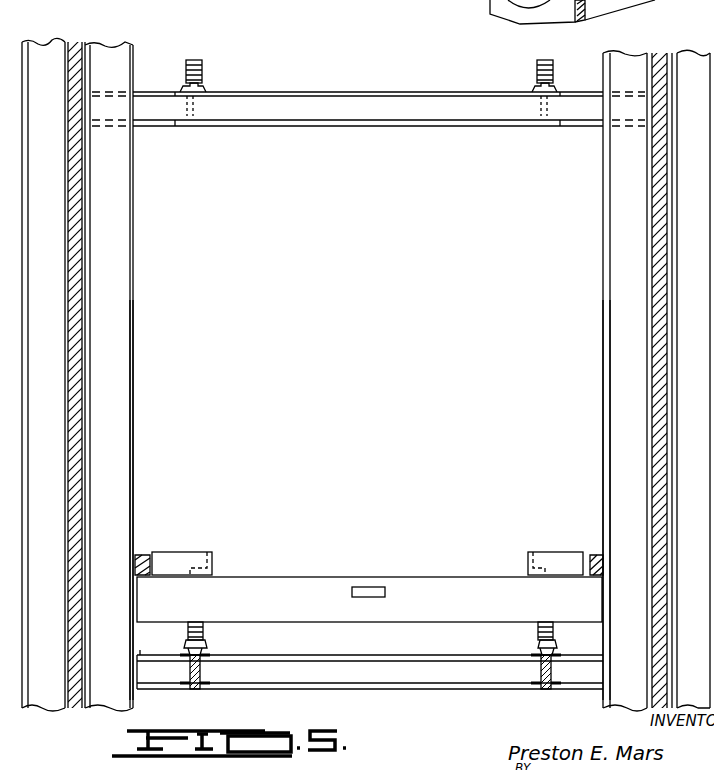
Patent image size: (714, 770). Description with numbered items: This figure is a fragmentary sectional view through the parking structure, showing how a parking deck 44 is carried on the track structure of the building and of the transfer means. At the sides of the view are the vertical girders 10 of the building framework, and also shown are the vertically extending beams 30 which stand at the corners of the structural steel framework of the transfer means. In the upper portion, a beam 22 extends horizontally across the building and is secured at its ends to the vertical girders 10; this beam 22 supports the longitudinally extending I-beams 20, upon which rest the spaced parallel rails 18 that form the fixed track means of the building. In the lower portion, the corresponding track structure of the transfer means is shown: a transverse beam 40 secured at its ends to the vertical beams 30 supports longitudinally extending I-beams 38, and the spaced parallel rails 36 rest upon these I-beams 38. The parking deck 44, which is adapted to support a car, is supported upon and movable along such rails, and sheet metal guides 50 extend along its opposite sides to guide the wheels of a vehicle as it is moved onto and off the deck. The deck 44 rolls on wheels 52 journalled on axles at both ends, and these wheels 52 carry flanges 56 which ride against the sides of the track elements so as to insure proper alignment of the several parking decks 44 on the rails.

The vertical girder 10 is at (42, 52).
The rail 18 is at (186, 80).
The I-beam 20 is at (197, 108).
The beam 22 is at (410, 113).
The vertical beam 30 is at (112, 514).
The rail 36 is at (190, 645).
The I-beam 38 is at (250, 637).
The transverse beam 40 is at (333, 661).
The parking deck 44 is at (447, 576).
The sheet metal guide 50 is at (214, 560).
The wheel 52 is at (193, 60).
The flange 56 is at (205, 644).